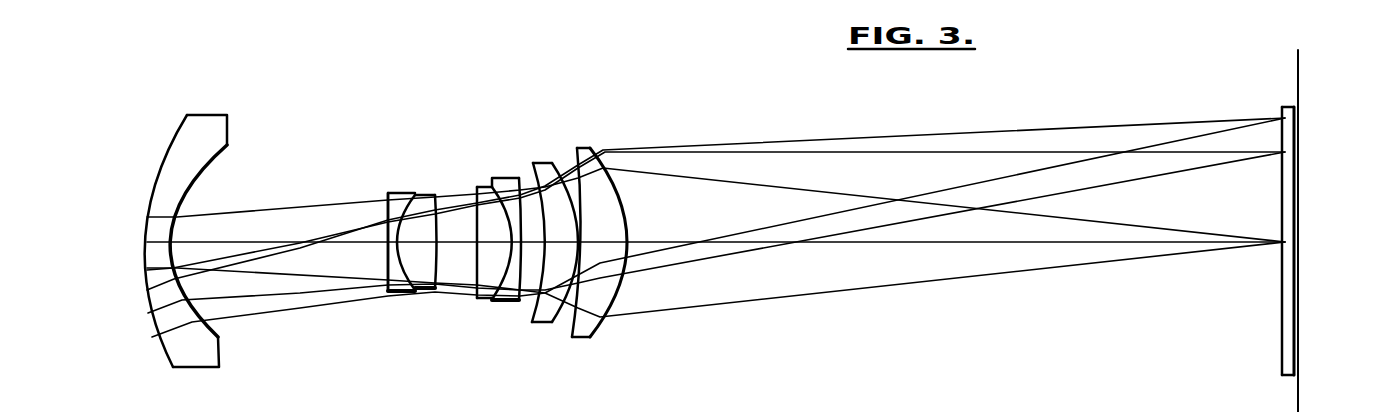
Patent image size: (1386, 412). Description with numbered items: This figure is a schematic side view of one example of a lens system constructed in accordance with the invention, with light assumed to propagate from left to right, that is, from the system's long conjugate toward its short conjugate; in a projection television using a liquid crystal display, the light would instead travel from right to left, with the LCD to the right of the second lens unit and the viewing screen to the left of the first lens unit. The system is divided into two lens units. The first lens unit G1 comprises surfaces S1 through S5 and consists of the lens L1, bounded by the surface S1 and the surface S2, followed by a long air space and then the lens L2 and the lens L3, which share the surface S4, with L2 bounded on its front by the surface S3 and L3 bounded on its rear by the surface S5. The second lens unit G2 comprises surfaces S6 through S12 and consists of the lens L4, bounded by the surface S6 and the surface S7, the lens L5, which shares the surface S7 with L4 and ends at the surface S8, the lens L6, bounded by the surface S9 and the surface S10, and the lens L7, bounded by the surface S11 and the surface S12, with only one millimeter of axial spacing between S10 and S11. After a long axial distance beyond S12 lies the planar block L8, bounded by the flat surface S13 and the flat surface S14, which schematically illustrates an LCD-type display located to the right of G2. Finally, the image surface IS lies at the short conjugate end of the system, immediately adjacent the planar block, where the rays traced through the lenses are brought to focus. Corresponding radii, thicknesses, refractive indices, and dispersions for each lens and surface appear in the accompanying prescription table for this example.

The first lens unit G1 is at (445, 53).
The second lens unit G2 is at (625, 53).
The lens L1 is at (175, 133).
The lens L2 is at (400, 190).
The lens L3 is at (427, 197).
The lens L4 is at (480, 190).
The lens L5 is at (503, 179).
The lens L6 is at (542, 162).
The lens L7 is at (585, 147).
The planar block L8 is at (1280, 357).
The lens surface S1 is at (160, 337).
The lens surface S2 is at (205, 330).
The lens surface S3 is at (387, 291).
The lens surface S4 is at (404, 289).
The lens surface S5 is at (440, 290).
The lens surface S6 is at (464, 272).
The lens surface S7 is at (500, 295).
The lens surface S8 is at (523, 292).
The lens surface S9 is at (543, 305).
The lens surface S10 is at (555, 320).
The lens surface S11 is at (603, 165).
The lens surface S12 is at (615, 293).
The lens surface S13 is at (1280, 313).
The lens surface S14 is at (1294, 282).
The image surface IS is at (1296, 390).